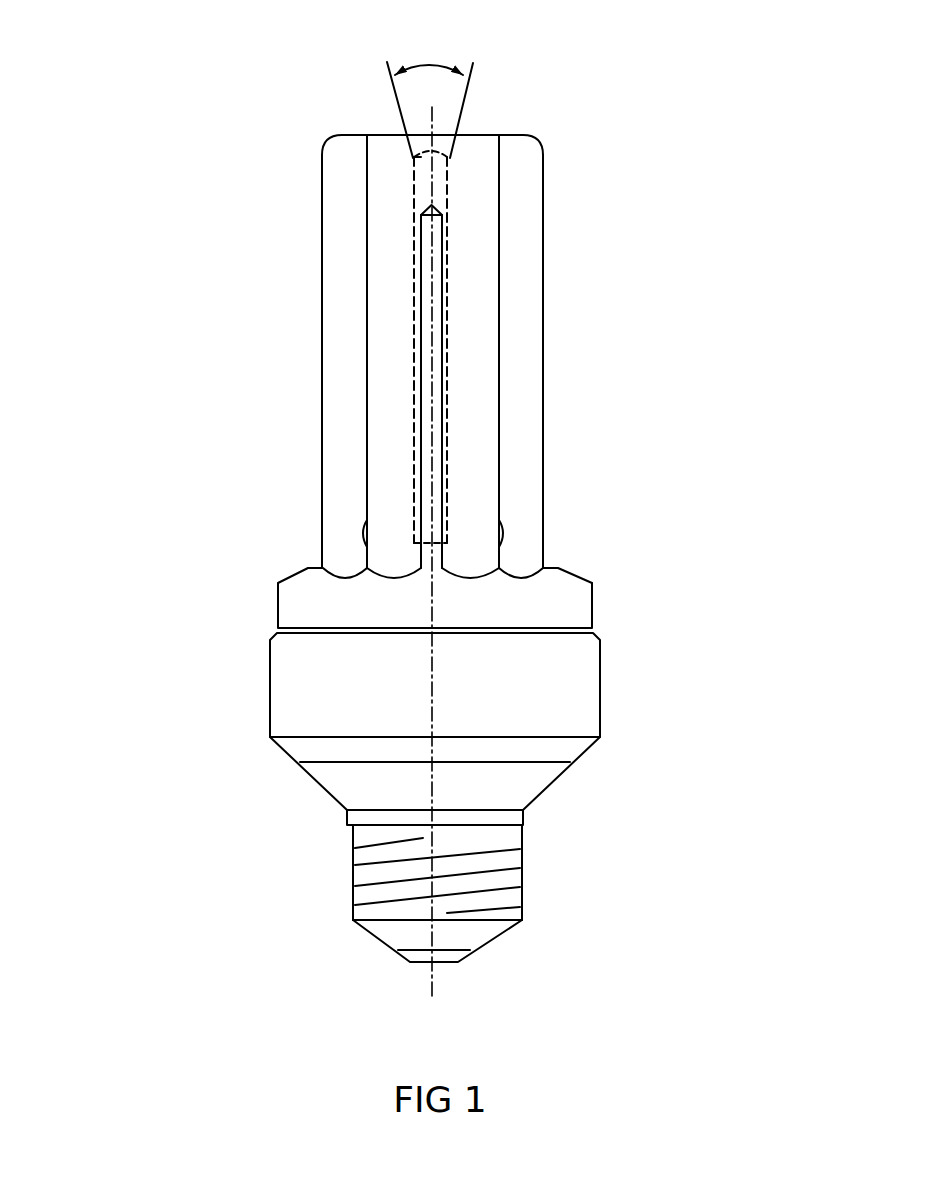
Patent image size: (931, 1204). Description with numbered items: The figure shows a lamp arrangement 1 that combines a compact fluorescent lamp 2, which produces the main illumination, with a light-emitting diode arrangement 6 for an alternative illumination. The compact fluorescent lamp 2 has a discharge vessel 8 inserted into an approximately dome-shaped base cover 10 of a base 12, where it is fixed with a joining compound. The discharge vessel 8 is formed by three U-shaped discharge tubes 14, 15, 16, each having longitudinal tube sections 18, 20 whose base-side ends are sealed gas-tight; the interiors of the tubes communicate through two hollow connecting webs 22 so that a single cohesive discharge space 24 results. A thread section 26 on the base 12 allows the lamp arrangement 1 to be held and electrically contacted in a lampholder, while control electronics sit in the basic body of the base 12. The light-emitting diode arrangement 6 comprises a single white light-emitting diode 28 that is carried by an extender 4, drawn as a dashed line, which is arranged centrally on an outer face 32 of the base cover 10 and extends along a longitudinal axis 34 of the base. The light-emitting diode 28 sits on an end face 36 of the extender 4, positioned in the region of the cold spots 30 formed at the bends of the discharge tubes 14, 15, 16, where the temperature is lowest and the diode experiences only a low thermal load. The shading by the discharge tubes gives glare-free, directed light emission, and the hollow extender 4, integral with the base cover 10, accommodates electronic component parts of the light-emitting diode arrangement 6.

The lamp arrangement 1 is at (180, 307).
The compact fluorescent lamp 2 is at (307, 373).
The extender 4 is at (414, 437).
The light-emitting diode arrangement 6 is at (411, 156).
The discharge vessel 8 is at (548, 247).
The base cover 10 is at (293, 605).
The base 12 is at (268, 691).
The discharge tube 14 is at (340, 260).
The discharge tube 15 is at (525, 369).
The discharge tube 16 is at (477, 183).
The longitudinal tube section 18 is at (360, 322).
The longitudinal tube section 20 is at (503, 311).
The hollow connecting web 22 is at (362, 533).
The discharge space 24 is at (525, 437).
The thread section 26 is at (347, 872).
The light-emitting diode 28 is at (440, 153).
The cold spots 30 is at (380, 127).
The outer face 32 is at (593, 580).
The longitudinal axis 34 is at (435, 982).
The end face 36 is at (460, 137).